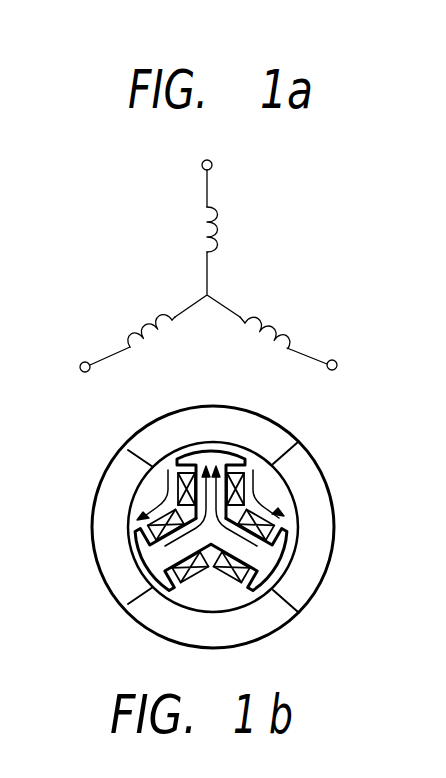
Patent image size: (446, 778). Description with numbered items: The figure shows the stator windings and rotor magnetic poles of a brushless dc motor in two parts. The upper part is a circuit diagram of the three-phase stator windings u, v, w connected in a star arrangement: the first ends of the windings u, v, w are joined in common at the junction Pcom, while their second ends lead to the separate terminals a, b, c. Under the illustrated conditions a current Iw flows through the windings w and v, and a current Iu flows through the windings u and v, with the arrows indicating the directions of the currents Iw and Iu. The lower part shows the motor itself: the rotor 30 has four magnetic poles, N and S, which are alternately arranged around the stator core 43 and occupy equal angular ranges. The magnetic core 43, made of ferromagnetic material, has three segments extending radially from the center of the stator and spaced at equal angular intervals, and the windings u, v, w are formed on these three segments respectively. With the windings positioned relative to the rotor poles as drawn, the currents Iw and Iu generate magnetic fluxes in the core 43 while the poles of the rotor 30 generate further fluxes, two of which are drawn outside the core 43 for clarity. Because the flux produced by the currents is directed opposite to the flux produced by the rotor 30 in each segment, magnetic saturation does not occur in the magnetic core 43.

In FIG. 1B, the rotor 30 is at (194, 407).
In FIG. 1B, the magnetic core 43 is at (142, 568).
In FIG. 1A, the terminal a is at (213, 162).
In FIG. 1A, the terminal b is at (338, 366).
In FIG. 1A, the terminal c is at (79, 368).
In FIG. 1A, the stator winding U u is at (289, 346).
In FIG. 1B, the stator winding U u is at (285, 528).
In FIG. 1A, the stator winding V v is at (215, 255).
In FIG. 1B, the stator winding V v is at (237, 470).
In FIG. 1A, the stator winding W w is at (131, 348).
In FIG. 1B, the stator winding W w is at (130, 528).
In FIG. 1A, the junction Pcom is at (203, 293).
In FIG. 1A, the current Iu is at (232, 253).
In FIG. 1A, the current Iw is at (179, 253).